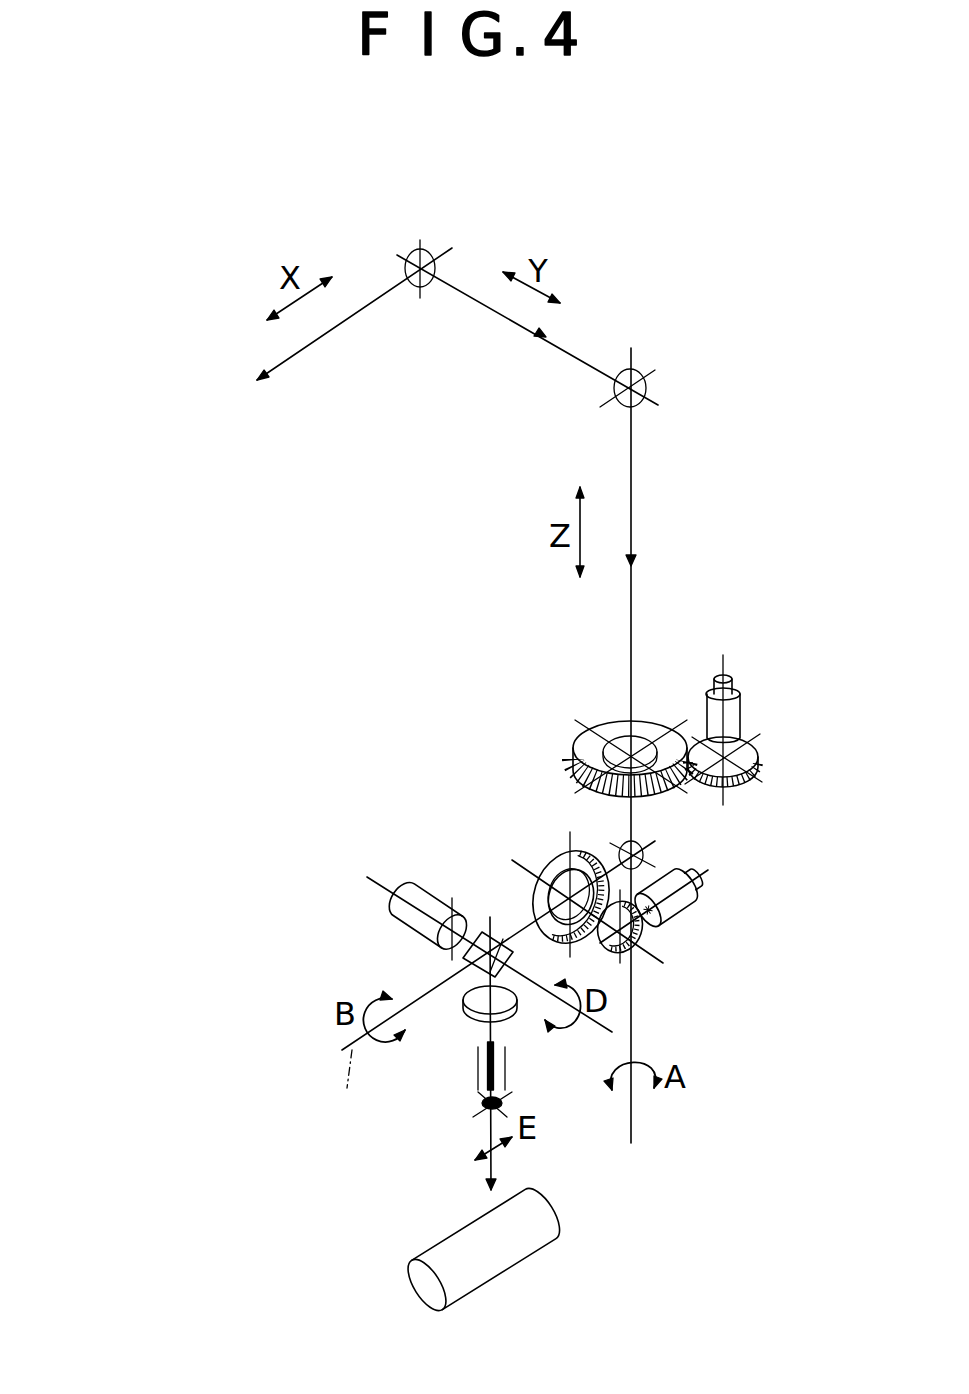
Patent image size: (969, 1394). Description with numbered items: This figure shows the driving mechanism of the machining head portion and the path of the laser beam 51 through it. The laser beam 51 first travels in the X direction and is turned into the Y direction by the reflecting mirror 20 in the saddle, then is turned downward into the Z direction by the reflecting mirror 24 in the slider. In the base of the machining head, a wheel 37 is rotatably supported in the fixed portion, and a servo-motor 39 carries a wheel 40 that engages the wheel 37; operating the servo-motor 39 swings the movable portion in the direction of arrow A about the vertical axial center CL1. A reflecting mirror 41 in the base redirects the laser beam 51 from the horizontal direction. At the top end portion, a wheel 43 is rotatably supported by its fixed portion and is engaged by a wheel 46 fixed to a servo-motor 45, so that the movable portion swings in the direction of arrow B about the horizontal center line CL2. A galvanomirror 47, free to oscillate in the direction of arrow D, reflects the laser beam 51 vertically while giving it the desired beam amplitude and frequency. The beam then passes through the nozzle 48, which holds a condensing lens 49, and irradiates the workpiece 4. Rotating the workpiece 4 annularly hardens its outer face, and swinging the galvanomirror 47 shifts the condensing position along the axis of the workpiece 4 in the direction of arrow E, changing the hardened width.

The workpiece 4 is at (524, 1255).
The reflecting mirror 20 is at (432, 252).
The reflecting mirror 24 is at (640, 384).
The wheel 37 is at (573, 754).
The servo-motor 39 is at (740, 693).
The wheel 40 is at (760, 750).
The reflecting mirror 41 is at (645, 853).
The wheel 43 is at (547, 853).
The servo-motor 45 is at (683, 913).
The wheel 46 is at (637, 953).
The galvanomirror 47 is at (502, 930).
The nozzle 48 is at (477, 1088).
The condensing lens 49 is at (472, 1016).
The laser beam 51 is at (342, 325).
The vertical axial center CL1 is at (635, 1130).
The horizontal center line CL2 is at (333, 1086).